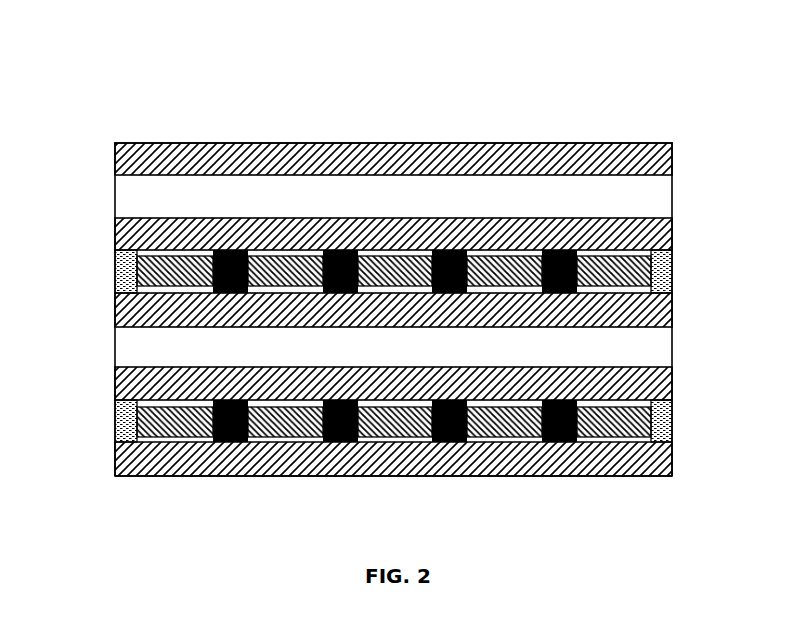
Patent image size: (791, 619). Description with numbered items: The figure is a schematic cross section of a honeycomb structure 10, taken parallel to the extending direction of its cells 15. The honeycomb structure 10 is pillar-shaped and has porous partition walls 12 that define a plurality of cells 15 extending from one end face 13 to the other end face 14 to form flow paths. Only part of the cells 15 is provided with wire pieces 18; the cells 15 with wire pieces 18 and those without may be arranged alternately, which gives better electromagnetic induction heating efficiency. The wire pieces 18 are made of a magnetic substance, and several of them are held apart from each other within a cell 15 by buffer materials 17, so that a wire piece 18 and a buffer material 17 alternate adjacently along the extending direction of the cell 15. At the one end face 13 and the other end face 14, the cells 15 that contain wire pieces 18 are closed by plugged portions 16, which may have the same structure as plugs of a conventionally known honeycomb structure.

The honeycomb structure 10 is at (400, 91).
The porous partition walls 12 is at (630, 158).
The one end face 13 is at (115, 462).
The other end face 14 is at (672, 462).
The cells 15 is at (153, 366).
The plugged portions 16 is at (116, 263).
The buffer materials 17 is at (468, 288).
The wire pieces 18 is at (300, 275).